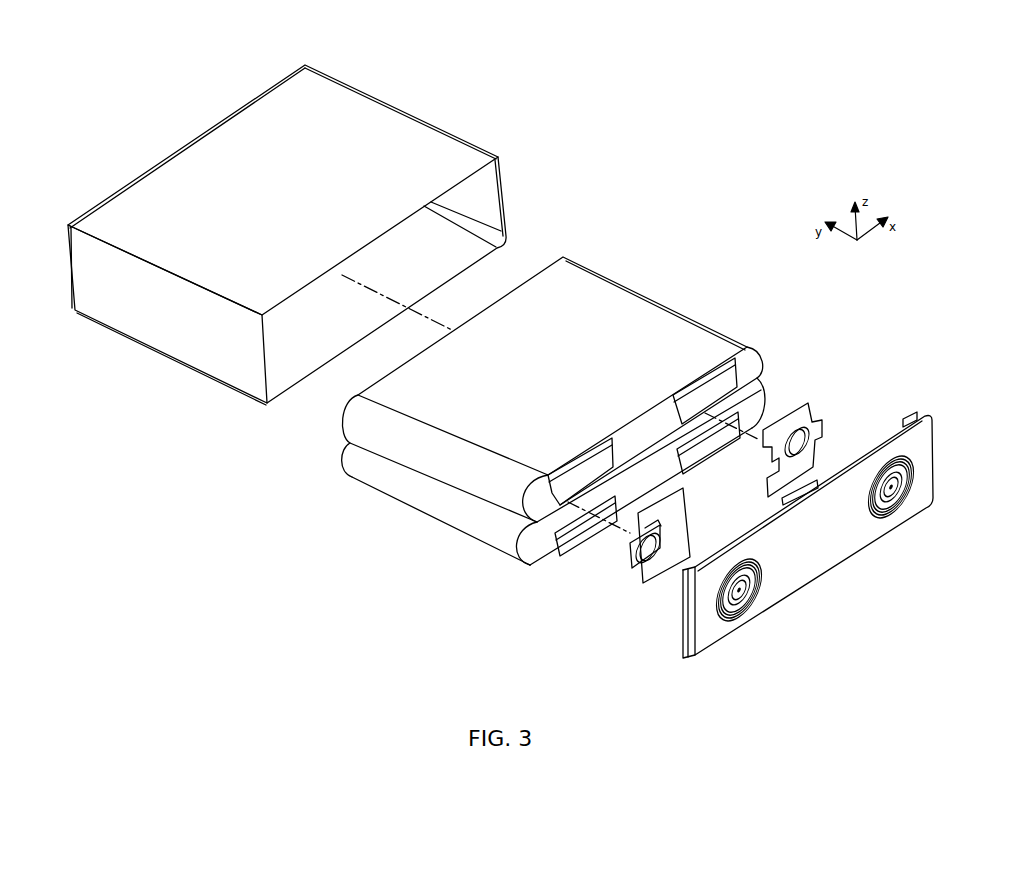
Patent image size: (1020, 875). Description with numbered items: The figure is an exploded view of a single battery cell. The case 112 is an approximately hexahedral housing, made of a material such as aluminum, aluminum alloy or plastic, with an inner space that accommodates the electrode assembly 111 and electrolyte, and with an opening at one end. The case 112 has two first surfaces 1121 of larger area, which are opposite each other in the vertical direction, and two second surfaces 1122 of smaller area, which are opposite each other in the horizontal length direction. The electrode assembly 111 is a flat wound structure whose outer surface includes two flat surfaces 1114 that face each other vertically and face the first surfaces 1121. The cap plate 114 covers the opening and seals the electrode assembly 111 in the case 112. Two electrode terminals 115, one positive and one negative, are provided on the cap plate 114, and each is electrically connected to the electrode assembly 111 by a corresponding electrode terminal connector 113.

The electrode assembly 111 is at (553, 387).
The flat surface 1114 is at (578, 305).
The case 112 is at (287, 220).
The first surface 1121 is at (345, 112).
The second surface 1122 is at (158, 322).
The electrode terminal connector 113 is at (795, 408).
The cap plate 114 is at (808, 516).
The electrode terminal 115 is at (893, 520).